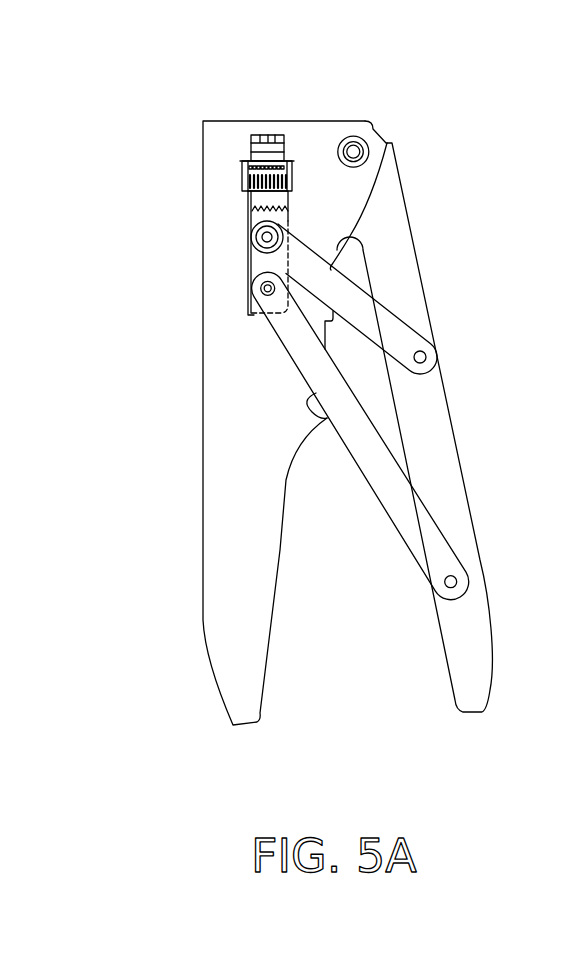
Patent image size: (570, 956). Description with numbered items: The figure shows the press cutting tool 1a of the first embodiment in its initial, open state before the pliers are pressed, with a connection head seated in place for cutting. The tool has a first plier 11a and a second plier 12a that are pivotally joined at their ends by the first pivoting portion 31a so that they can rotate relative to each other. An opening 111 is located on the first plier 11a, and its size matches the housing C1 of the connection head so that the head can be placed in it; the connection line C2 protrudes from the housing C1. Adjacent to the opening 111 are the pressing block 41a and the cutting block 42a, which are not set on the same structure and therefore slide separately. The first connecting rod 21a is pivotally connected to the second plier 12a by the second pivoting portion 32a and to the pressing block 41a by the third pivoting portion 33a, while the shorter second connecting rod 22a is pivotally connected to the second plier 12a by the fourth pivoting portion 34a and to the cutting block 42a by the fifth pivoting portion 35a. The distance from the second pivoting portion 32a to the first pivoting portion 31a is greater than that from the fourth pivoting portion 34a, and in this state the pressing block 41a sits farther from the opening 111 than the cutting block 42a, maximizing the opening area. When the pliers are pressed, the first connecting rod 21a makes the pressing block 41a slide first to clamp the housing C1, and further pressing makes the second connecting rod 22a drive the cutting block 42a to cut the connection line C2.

The press cutting tool 1a is at (322, 373).
The first plier 11a is at (223, 539).
The second plier 12a is at (433, 422).
The first connecting rod 21a is at (393, 511).
The second connecting rod 22a is at (371, 309).
The first pivoting portion 31a is at (362, 143).
The second pivoting portion 32a is at (447, 585).
The third pivoting portion 33a is at (262, 287).
The fourth pivoting portion 34a is at (424, 356).
The fifth pivoting portion 35a is at (282, 234).
The pressing block 41a is at (250, 313).
The cutting block 42a is at (249, 219).
The opening 111 is at (282, 136).
The housing C1 is at (247, 182).
The connection line C2 is at (252, 162).